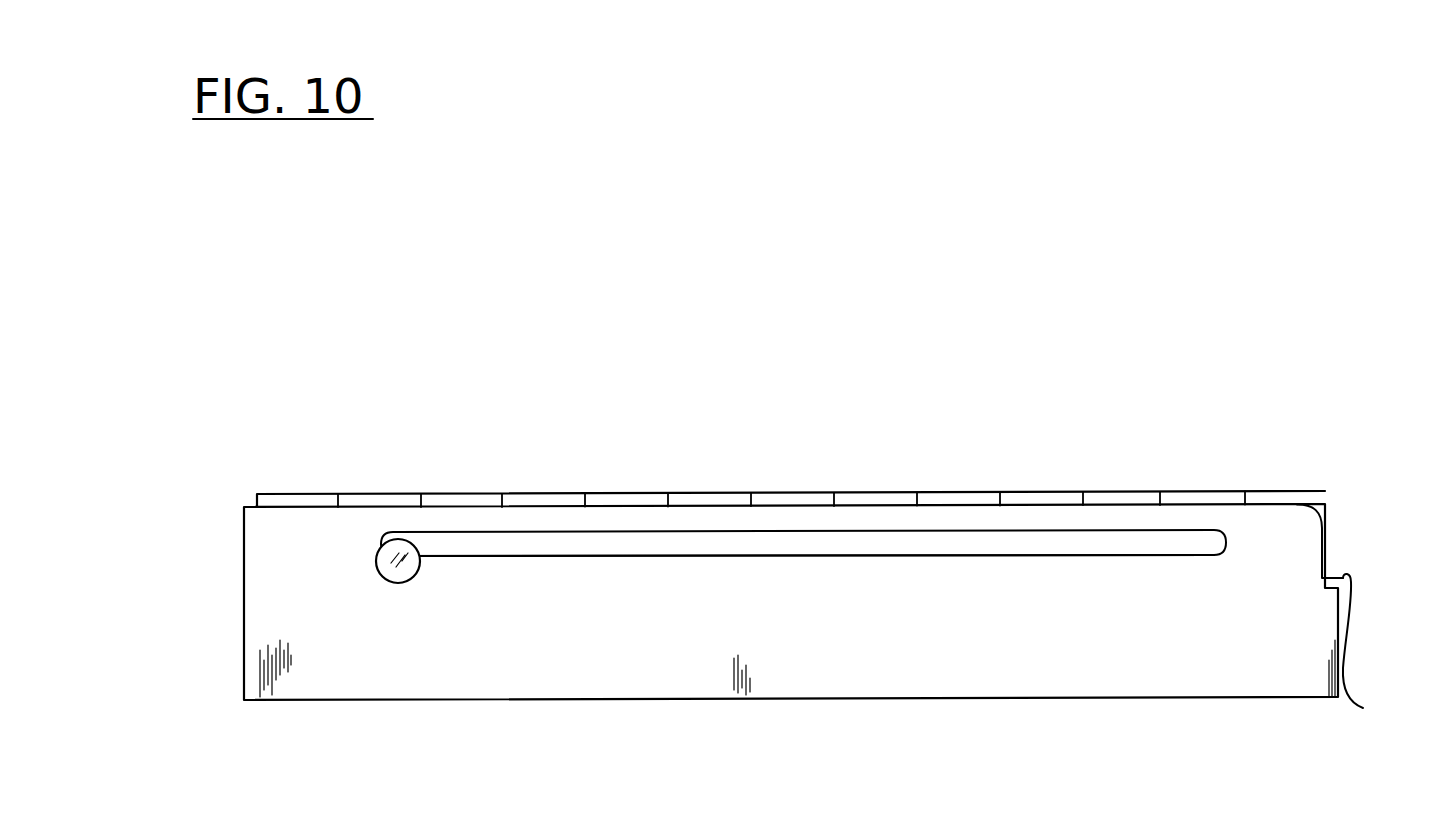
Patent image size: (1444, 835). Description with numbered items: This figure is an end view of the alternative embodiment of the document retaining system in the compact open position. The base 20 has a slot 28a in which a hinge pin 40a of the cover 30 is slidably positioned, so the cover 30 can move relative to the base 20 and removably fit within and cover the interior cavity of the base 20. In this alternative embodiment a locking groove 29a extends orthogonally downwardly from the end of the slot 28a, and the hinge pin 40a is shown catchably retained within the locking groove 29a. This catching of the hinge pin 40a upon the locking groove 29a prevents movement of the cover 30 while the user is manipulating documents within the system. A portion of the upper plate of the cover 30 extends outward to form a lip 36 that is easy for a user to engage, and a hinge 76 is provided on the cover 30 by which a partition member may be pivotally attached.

The base 20 is at (362, 492).
The cover 30 is at (1010, 474).
The hinge 76 is at (1295, 497).
The lip 36 is at (1386, 651).
The locking groove 29a is at (377, 553).
The slot 28a is at (568, 556).
The hinge pin 40a is at (397, 570).